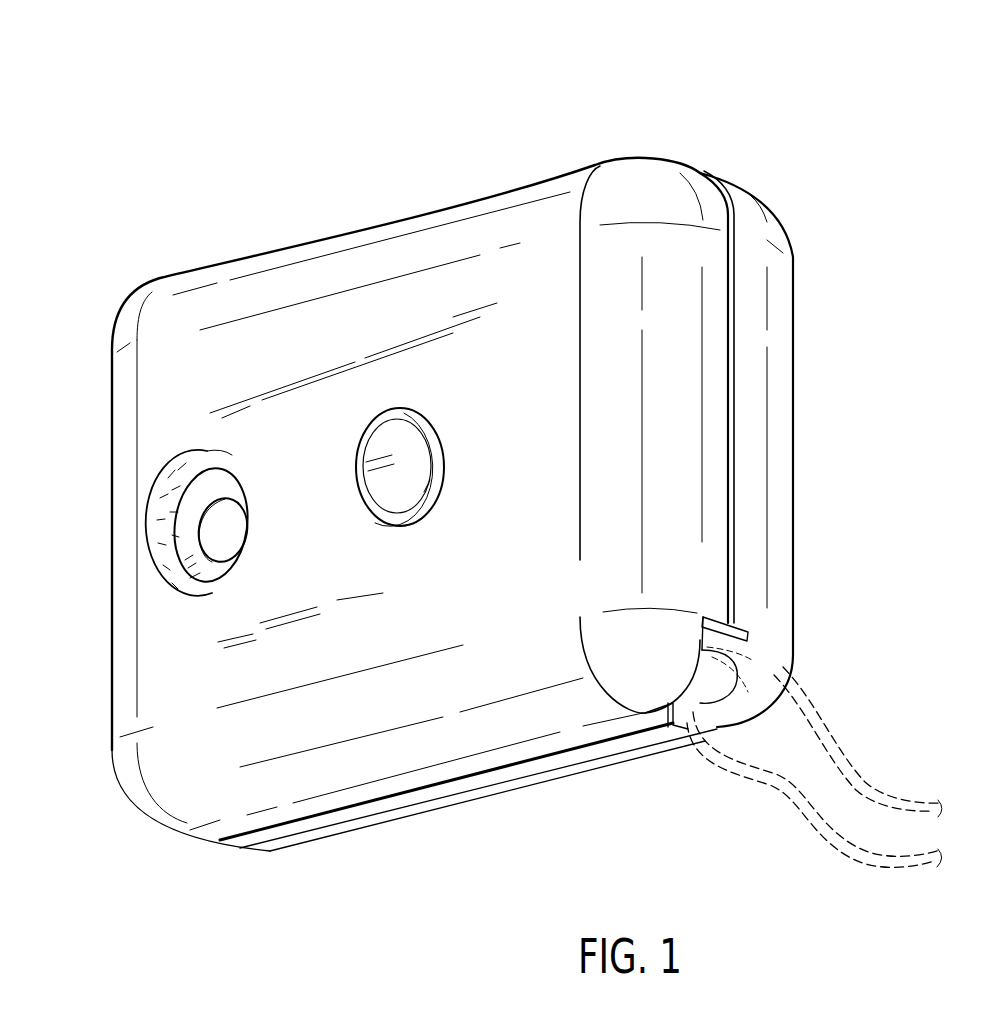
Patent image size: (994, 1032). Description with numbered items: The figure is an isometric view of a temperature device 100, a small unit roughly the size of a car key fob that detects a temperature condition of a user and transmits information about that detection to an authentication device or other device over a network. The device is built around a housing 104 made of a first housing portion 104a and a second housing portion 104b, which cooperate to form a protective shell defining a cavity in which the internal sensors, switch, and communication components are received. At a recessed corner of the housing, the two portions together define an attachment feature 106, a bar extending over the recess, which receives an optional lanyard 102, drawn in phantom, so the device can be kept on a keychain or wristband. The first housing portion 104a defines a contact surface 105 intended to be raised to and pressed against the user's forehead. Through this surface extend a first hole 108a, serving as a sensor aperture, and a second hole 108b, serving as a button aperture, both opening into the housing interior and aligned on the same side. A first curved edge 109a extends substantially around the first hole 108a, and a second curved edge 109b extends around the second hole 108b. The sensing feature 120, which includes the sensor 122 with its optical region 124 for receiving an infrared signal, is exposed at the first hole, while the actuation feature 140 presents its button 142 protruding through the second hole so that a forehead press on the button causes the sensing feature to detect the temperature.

The temperature device 100 is at (701, 90).
The lanyard 102 is at (827, 722).
The housing 104 is at (128, 323).
The first housing portion 104a is at (690, 260).
The second housing portion 104b is at (787, 360).
The contact surface 105 is at (180, 680).
The attachment feature 106 is at (720, 673).
The first hole 108a is at (177, 503).
The second hole 108b is at (423, 516).
The first curved edge 109a is at (183, 465).
The second curved edge 109b is at (417, 417).
The sensing feature 120 is at (86, 540).
The sensor 122 is at (218, 480).
The optical region 124 is at (227, 523).
The actuation feature 140 is at (371, 407).
The button 142 is at (410, 449).